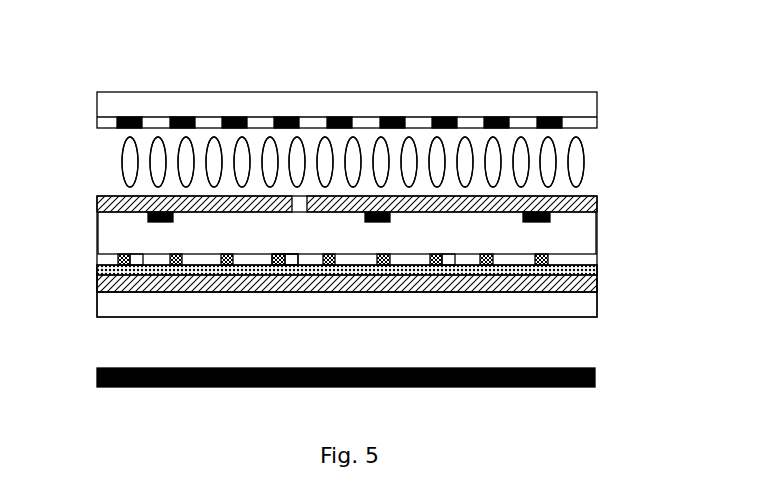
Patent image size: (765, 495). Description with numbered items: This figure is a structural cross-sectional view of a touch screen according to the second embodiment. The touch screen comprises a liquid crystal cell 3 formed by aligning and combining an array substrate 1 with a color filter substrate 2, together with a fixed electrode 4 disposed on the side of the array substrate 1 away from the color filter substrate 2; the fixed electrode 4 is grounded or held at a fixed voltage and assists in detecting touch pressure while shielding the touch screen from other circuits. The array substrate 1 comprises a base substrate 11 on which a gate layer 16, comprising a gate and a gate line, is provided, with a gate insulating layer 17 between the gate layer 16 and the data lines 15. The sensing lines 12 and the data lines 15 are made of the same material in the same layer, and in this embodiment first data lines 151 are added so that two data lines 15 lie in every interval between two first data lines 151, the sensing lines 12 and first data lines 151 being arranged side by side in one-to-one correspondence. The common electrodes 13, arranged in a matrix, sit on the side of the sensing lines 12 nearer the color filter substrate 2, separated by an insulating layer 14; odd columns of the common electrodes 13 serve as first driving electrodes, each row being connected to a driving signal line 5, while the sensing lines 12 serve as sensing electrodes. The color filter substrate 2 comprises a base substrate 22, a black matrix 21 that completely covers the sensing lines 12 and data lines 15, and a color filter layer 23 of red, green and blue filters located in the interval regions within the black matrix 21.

The array substrate 1 is at (334, 203).
The color filter substrate 2 is at (357, 89).
The liquid crystal cell 3 is at (625, 317).
The fixed electrode 4 is at (515, 386).
The driving signal line 5 is at (534, 196).
The base substrate 11 is at (552, 305).
The sensing lines 12 is at (447, 270).
The common electrodes 13 is at (102, 196).
The insulating layer 14 is at (108, 238).
The data lines 15 is at (385, 262).
The gate layer 16 is at (212, 277).
The gate insulating layer 17 is at (152, 273).
The first data lines 151 is at (278, 260).
The black matrix 21 is at (178, 118).
The base substrate 22 is at (283, 108).
The color filter layer 23 is at (468, 122).